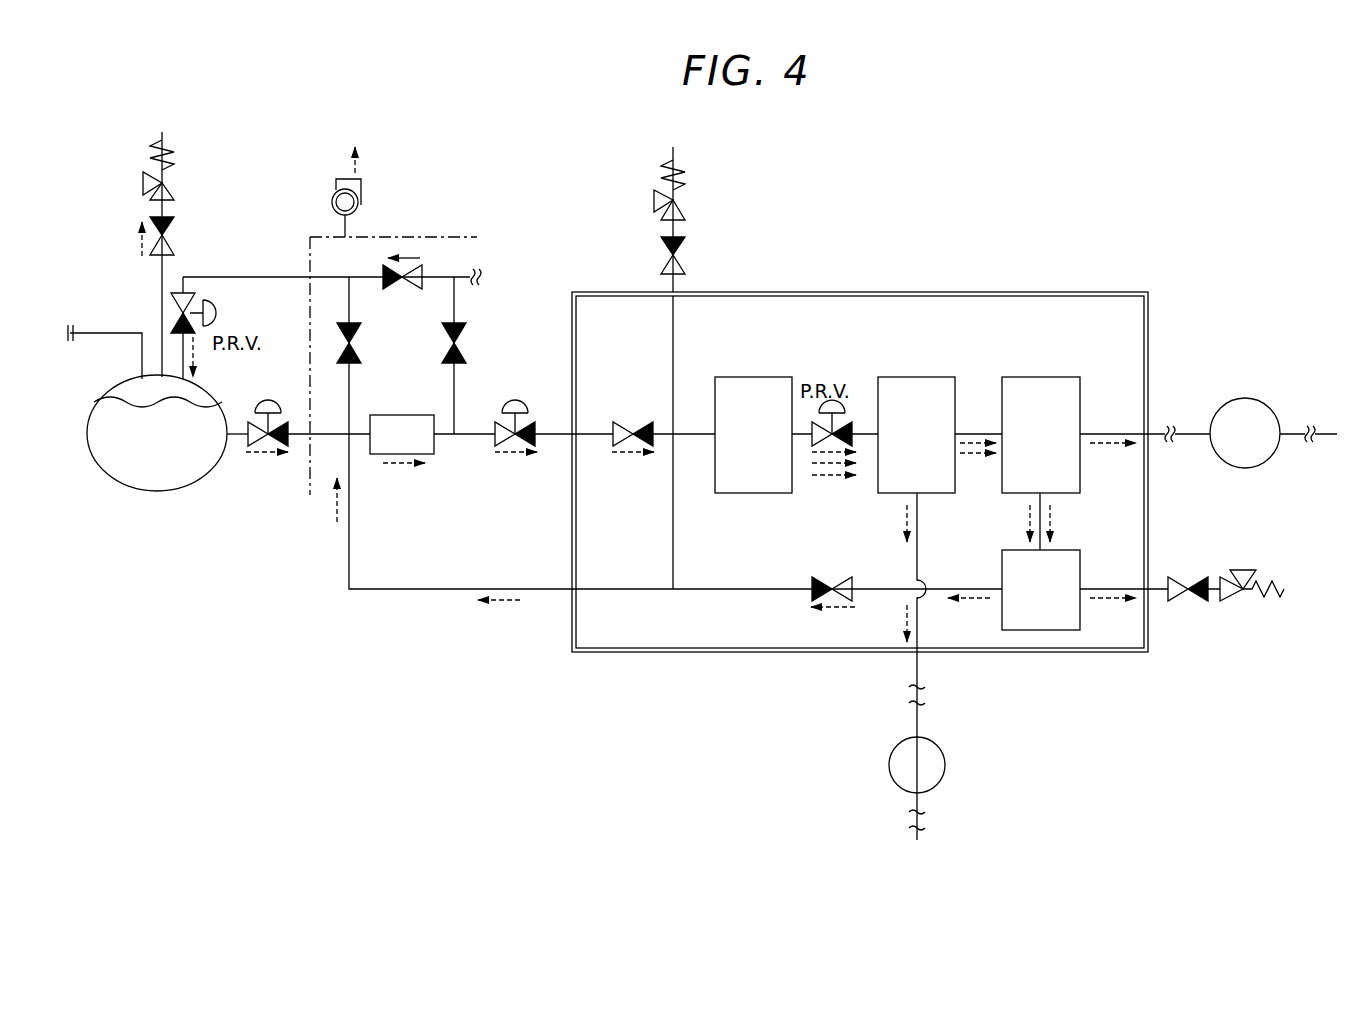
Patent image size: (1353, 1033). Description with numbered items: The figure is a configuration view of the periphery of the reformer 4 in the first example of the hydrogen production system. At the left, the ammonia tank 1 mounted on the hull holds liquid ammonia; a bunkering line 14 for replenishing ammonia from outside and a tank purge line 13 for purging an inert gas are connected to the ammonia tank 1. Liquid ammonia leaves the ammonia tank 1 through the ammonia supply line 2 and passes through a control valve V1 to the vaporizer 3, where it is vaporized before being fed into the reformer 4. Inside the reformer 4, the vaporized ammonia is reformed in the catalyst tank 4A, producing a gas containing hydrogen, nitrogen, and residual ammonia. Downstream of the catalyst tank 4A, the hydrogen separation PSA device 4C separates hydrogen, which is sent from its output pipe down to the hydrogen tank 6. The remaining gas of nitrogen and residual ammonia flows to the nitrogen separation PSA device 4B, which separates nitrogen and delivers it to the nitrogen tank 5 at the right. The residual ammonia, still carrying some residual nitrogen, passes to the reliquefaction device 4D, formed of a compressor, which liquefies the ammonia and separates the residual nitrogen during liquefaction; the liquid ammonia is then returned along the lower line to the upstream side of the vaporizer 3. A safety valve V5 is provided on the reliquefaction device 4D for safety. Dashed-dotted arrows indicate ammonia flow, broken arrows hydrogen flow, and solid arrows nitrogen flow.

The ammonia tank 1 is at (204, 478).
The ammonia supply line 2 is at (236, 440).
The vaporizer 3 is at (402, 415).
The reformer 4 is at (1148, 628).
The catalyst tank 4A is at (753, 377).
The nitrogen separation PSA device 4B is at (1038, 377).
The hydrogen separation PSA device 4C is at (915, 377).
The reliquefaction device 4D is at (1082, 556).
The nitrogen tank 5 is at (1246, 398).
The hydrogen tank 6 is at (945, 758).
The tank purge line 13 is at (244, 277).
The bunkering line 14 is at (116, 333).
The control valve V1 is at (282, 427).
The safety valve V5 is at (1241, 570).